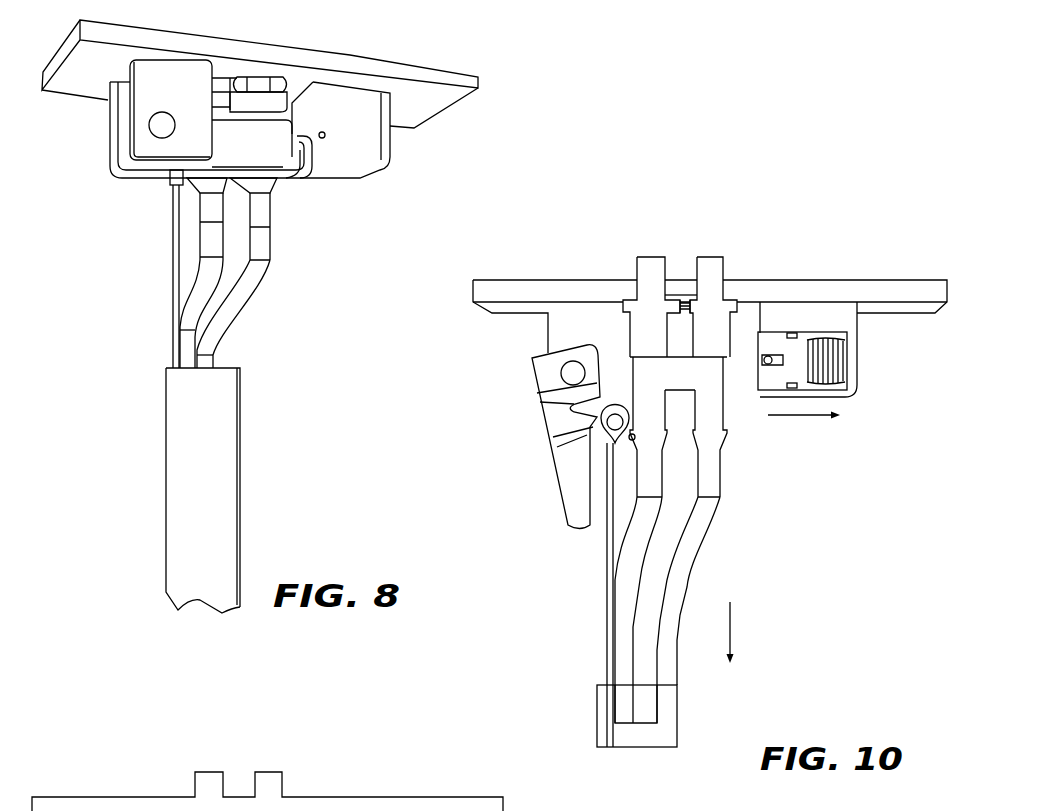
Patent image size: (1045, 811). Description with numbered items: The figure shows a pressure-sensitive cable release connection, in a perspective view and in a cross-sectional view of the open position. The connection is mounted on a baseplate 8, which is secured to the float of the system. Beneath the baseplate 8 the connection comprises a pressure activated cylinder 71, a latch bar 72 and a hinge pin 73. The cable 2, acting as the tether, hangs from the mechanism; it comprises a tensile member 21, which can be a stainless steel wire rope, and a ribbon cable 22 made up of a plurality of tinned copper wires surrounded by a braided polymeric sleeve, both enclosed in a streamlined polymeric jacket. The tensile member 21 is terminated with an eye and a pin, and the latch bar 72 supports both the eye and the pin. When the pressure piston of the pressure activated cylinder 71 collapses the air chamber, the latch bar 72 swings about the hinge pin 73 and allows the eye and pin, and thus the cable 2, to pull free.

In FIG. 8, the baseplate 8 is at (482, 77).
In FIG. 8, the hinge pin 73 is at (102, 138).
In FIG. 8, the pressure activated cylinder 71 is at (392, 145).
In FIG. 8, the latch bar 72 is at (287, 180).
In FIG. 8, the tensile member 21 is at (168, 257).
In FIG. 10, the tensile member 21 is at (608, 542).
In FIG. 8, the ribbon cable 22 is at (277, 280).
In FIG. 10, the ribbon cable 22 is at (723, 533).
In FIG. 8, the cable 2 is at (243, 468).
In FIG. 10, the cable 2 is at (678, 695).